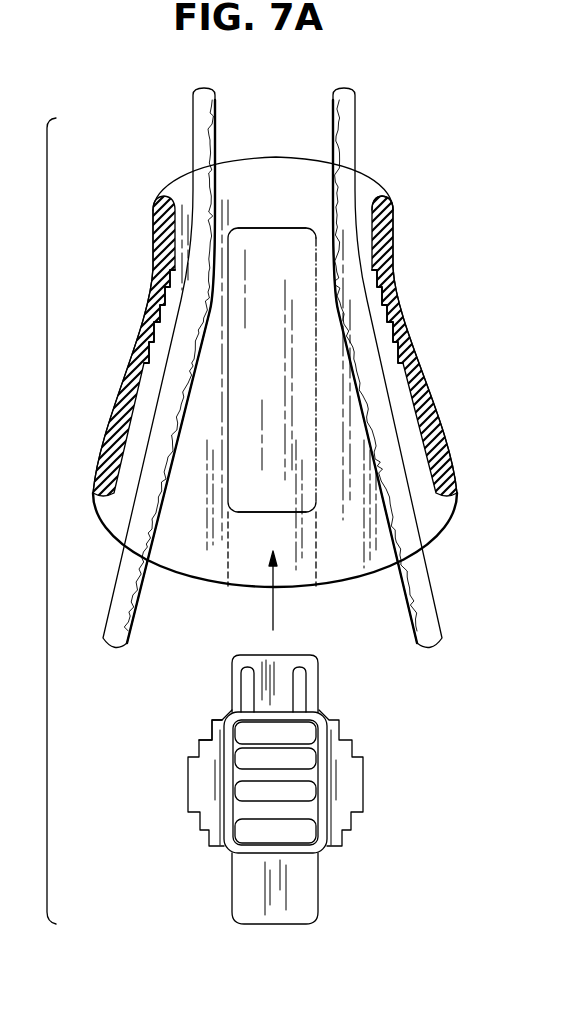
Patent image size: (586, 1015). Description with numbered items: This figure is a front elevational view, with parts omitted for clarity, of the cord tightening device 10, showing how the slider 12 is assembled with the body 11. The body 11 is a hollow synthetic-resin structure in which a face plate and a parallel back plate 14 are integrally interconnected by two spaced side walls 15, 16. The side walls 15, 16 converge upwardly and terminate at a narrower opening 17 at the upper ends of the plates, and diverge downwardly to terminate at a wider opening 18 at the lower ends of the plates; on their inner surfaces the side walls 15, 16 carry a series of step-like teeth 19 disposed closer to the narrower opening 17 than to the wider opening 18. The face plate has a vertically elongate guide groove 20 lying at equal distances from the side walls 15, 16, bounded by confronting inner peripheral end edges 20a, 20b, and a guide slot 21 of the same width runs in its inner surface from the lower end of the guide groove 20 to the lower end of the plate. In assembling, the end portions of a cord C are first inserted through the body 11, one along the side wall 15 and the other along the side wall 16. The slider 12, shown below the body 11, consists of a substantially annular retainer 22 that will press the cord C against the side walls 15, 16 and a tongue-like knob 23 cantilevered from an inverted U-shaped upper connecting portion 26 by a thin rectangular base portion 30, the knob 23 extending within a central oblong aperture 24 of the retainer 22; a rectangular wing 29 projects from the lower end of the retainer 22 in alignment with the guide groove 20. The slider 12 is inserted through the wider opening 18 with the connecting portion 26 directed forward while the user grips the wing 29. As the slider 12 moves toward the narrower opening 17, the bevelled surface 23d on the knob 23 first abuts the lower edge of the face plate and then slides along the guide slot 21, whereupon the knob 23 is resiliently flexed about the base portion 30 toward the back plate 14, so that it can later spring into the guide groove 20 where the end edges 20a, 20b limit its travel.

The cord tightening device 10 is at (47, 512).
The body 11 is at (274, 366).
The slider 12 is at (279, 769).
The back plate 14 is at (109, 541).
The side wall 15 is at (447, 466).
The side wall 16 is at (259, 346).
The narrower opening 17 is at (368, 196).
The wider opening 18 is at (378, 560).
The step-like teeth 19 is at (150, 333).
The guide groove 20 is at (342, 362).
The peripheral end edge 20a is at (282, 232).
The peripheral end edge 20b is at (250, 515).
The guide slot 21 is at (317, 548).
The annular retainer 22 is at (361, 776).
The knob 23 is at (197, 778).
The bevelled surface 23d is at (247, 733).
The central oblong aperture 24 is at (320, 803).
The upper connecting portion 26 is at (288, 654).
The rectangular wing 29 is at (304, 898).
The base portion 30 is at (281, 707).
The cord C is at (193, 112).